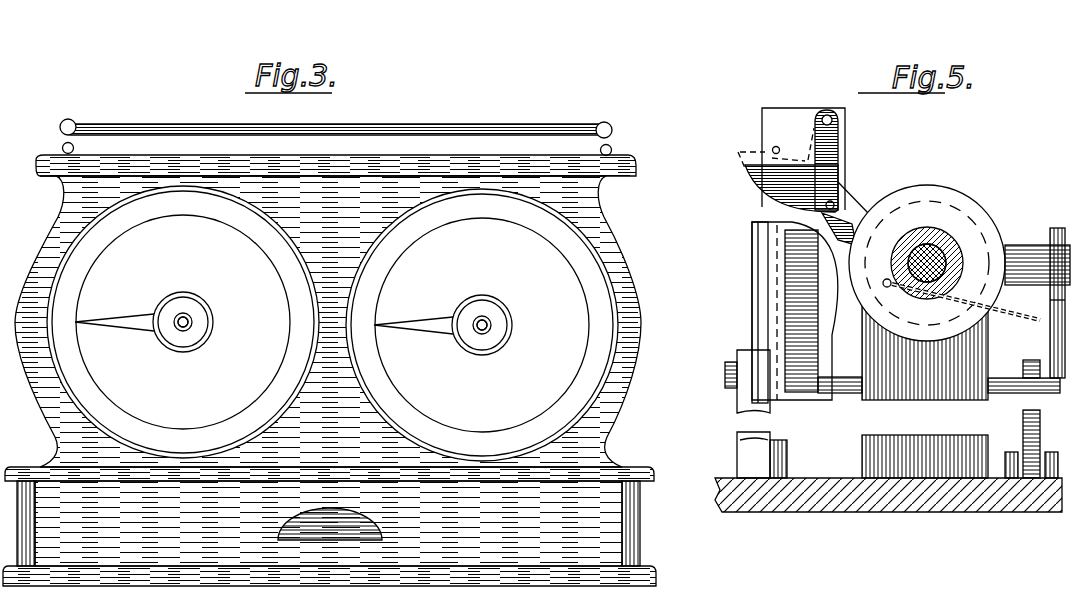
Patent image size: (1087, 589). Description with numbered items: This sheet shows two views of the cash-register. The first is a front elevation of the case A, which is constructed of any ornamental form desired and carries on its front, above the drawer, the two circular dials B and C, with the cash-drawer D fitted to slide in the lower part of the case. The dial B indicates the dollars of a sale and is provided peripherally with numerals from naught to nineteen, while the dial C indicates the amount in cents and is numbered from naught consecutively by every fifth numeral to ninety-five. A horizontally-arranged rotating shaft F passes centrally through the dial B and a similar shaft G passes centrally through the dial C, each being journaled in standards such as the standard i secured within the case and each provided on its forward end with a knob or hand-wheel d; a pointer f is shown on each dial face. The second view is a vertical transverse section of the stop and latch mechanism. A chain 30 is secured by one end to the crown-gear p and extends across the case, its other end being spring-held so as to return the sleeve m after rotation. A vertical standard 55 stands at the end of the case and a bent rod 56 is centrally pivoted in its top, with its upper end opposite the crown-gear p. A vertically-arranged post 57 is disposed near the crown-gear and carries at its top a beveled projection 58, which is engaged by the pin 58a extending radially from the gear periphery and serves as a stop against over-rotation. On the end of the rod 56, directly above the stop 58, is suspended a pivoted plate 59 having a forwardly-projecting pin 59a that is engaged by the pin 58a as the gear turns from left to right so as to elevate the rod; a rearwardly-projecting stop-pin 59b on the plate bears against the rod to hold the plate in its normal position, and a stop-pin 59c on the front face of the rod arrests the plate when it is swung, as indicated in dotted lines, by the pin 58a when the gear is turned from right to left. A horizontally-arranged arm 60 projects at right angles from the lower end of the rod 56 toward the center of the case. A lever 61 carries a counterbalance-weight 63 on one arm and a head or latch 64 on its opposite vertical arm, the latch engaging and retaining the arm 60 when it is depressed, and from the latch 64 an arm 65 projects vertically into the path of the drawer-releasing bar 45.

In FIG. 3, the case A is at (648, 263).
In FIG. 3, the dollars dial B is at (183, 322).
In FIG. 3, the cents dial C is at (482, 325).
In FIG. 3, the cash-drawer D is at (600, 530).
In FIG. 3, the rotating shaft F is at (205, 314).
In FIG. 5, the rotating shaft F is at (930, 258).
In FIG. 3, the shaft G is at (512, 326).
In FIG. 3, the knob or hand-wheel d is at (215, 330).
In FIG. 3, the pointer f is at (123, 331).
In FIG. 5, the chain 30 is at (1016, 321).
In FIG. 5, the drawer-releasing bar 45 is at (1028, 245).
In FIG. 5, the vertical standard 55 is at (740, 398).
In FIG. 5, the bent rod 56 is at (762, 120).
In FIG. 5, the post 57 is at (748, 327).
In FIG. 5, the beveled projection 58 is at (795, 311).
In FIG. 5, the pin 58a is at (872, 182).
In FIG. 5, the pivoted plate 59 is at (846, 172).
In FIG. 5, the forwardly-projecting pin 59a is at (846, 196).
In FIG. 5, the stop-pin 59b is at (744, 167).
In FIG. 5, the stop-pin 59c is at (776, 146).
In FIG. 5, the arm 60 is at (851, 386).
In FIG. 5, the lever 61 is at (1023, 414).
In FIG. 5, the counterbalance-weight 63 is at (1023, 426).
In FIG. 5, the head or latch 64 is at (1023, 368).
In FIG. 5, the arm 65 is at (1050, 300).
In FIG. 5, the standard i is at (912, 396).
In FIG. 5, the sleeve m is at (905, 257).
In FIG. 5, the crown-gear p is at (998, 216).